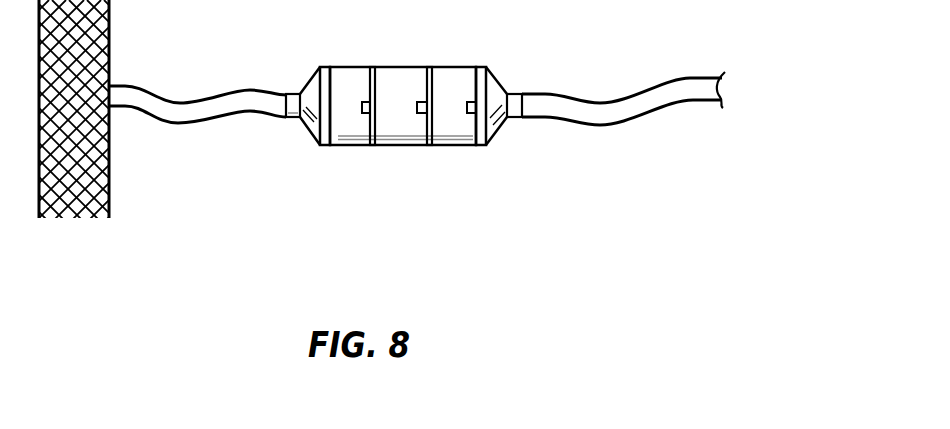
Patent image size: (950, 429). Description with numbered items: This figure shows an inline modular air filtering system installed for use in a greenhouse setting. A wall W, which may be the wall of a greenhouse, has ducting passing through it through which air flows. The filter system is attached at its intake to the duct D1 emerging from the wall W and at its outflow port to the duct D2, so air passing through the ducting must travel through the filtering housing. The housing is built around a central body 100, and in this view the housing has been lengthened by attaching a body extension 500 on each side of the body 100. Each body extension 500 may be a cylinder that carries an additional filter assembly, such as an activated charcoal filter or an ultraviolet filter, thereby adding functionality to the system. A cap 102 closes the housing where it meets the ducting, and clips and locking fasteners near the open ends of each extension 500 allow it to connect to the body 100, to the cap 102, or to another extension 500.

The wall W is at (82, 187).
The duct D1 is at (172, 110).
The duct D2 is at (617, 112).
The body 100 is at (400, 120).
The cap 102 is at (307, 116).
The body extension 500 is at (354, 118).